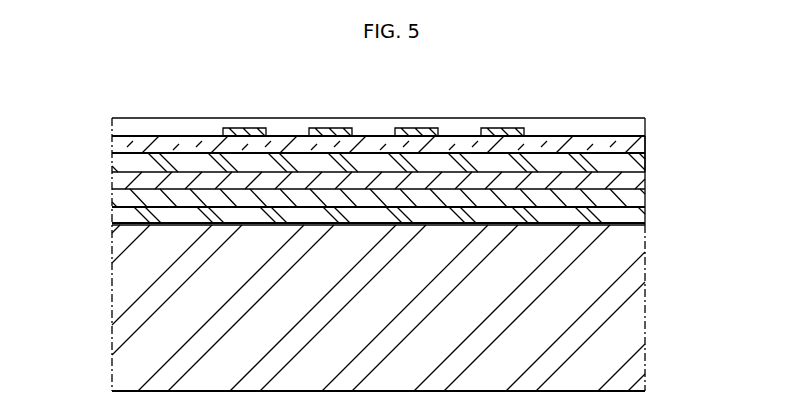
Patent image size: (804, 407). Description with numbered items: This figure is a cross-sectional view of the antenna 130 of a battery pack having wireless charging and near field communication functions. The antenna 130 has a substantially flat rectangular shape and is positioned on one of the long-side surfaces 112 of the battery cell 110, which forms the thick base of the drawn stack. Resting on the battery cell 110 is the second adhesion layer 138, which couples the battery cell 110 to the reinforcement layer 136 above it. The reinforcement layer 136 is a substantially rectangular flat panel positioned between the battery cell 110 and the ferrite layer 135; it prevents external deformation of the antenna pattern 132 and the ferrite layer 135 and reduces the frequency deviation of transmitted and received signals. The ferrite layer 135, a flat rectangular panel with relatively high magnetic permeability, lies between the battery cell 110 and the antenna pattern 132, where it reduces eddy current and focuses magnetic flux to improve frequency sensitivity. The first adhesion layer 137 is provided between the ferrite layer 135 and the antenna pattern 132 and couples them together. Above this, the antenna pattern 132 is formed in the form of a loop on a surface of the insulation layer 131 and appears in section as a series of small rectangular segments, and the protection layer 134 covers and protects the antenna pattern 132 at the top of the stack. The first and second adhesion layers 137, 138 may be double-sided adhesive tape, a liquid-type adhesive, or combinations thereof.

The battery cell 110 is at (638, 304).
The long-side surface 112 is at (635, 221).
The antenna 130 is at (660, 162).
The insulation layer 131 is at (638, 147).
The antenna pattern 132 is at (509, 127).
The protection layer 134 is at (596, 126).
The ferrite layer 135 is at (118, 177).
The reinforcement layer 136 is at (118, 197).
The first adhesion layer 137 is at (118, 158).
The second adhesion layer 138 is at (118, 213).